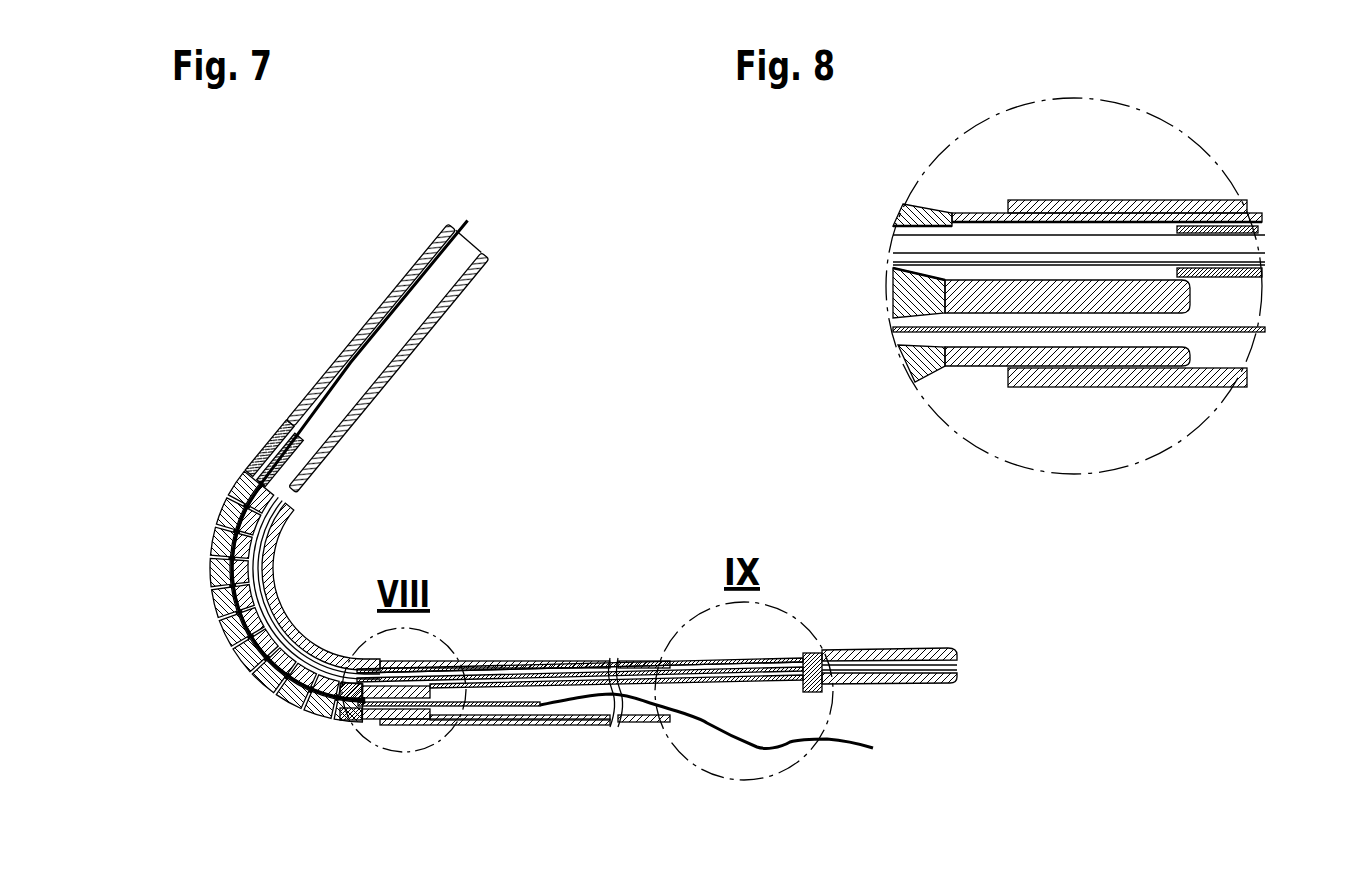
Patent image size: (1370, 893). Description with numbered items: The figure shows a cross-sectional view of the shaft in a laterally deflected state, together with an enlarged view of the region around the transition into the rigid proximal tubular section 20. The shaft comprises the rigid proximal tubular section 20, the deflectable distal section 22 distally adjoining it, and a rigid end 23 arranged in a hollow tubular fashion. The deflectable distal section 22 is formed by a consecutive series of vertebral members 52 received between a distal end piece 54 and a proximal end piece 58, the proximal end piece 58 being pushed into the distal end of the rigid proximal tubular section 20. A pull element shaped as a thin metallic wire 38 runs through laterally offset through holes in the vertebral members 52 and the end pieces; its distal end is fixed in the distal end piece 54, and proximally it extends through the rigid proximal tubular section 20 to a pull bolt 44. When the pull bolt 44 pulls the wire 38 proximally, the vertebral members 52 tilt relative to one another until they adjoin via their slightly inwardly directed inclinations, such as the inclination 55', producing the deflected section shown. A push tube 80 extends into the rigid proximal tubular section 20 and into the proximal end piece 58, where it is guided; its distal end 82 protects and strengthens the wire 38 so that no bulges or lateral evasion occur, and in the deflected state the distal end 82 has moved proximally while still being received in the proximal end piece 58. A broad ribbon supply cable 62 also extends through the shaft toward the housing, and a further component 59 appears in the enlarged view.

In FIG. 7, the rigid proximal tubular section 20 is at (520, 662).
In FIG. 8, the rigid proximal tubular section 20 is at (1160, 214).
In FIG. 7, the deflectable distal section 22 is at (270, 556).
In FIG. 7, the rigid end 23 is at (428, 340).
In FIG. 8, the wire 38 is at (1250, 240).
In FIG. 7, the pull bolt 44 is at (916, 652).
In FIG. 7, the vertebral member 52 is at (350, 678).
In FIG. 8, the vertebral member 52 is at (915, 213).
In FIG. 7, the distal end piece 54 is at (248, 468).
In FIG. 8, the inclination 55' is at (883, 324).
In FIG. 7, the proximal end piece 58 is at (385, 726).
In FIG. 8, the proximal end piece 58 is at (993, 214).
In FIG. 8, the spacer body 59 is at (1080, 228).
In FIG. 7, the supply cable 62 is at (874, 750).
In FIG. 8, the supply cable 62 is at (1250, 333).
In FIG. 8, the push tube 80 is at (1250, 278).
In FIG. 8, the distal end of the push tube 82 is at (1240, 213).